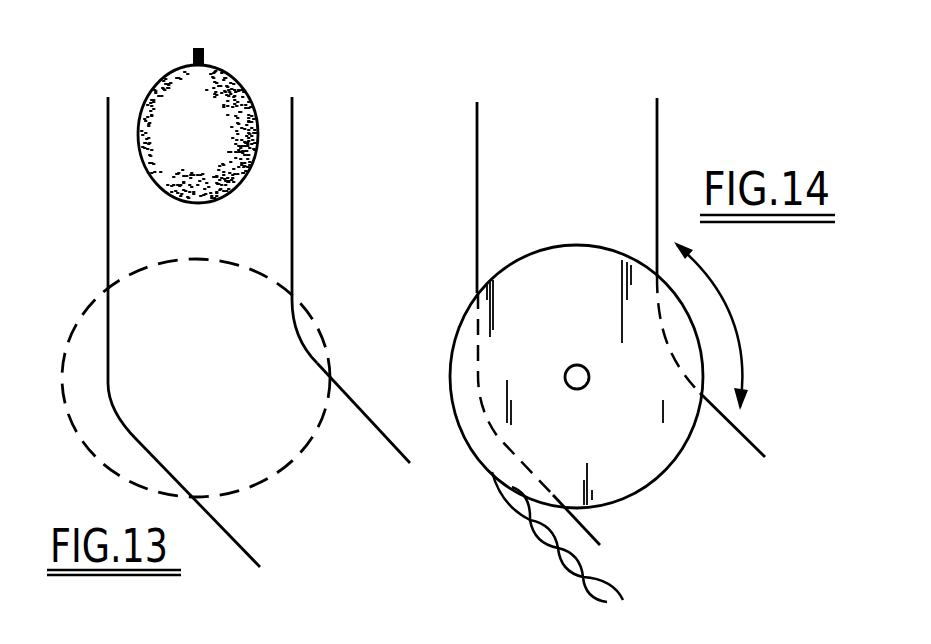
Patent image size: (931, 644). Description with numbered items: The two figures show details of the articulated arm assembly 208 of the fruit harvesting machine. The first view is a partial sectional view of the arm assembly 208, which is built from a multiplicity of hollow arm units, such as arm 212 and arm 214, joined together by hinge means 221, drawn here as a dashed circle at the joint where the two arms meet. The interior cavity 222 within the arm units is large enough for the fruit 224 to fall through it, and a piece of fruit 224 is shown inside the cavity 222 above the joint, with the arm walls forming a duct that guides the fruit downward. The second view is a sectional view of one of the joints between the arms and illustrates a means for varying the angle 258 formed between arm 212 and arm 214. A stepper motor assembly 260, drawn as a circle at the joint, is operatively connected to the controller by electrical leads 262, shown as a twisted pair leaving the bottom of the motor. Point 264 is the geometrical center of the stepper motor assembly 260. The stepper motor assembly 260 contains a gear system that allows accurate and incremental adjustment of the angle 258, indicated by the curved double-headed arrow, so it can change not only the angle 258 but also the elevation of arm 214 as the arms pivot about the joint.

In FIG. 13, the arm assembly 208 is at (93, 226).
In FIG. 13, the arm 212 is at (355, 403).
In FIG. 14, the arm 212 is at (755, 443).
In FIG. 13, the arm 214 is at (292, 242).
In FIG. 14, the arm 214 is at (657, 140).
In FIG. 13, the hinge means 221 is at (97, 298).
In FIG. 13, the interior cavity 222 is at (125, 120).
In FIG. 13, the fruit 224 is at (208, 92).
In FIG. 14, the angle 258 is at (732, 318).
In FIG. 14, the stepper motor assembly 260 is at (455, 338).
In FIG. 14, the electrical leads 262 is at (535, 543).
In FIG. 14, the geometrical center 264 is at (572, 365).